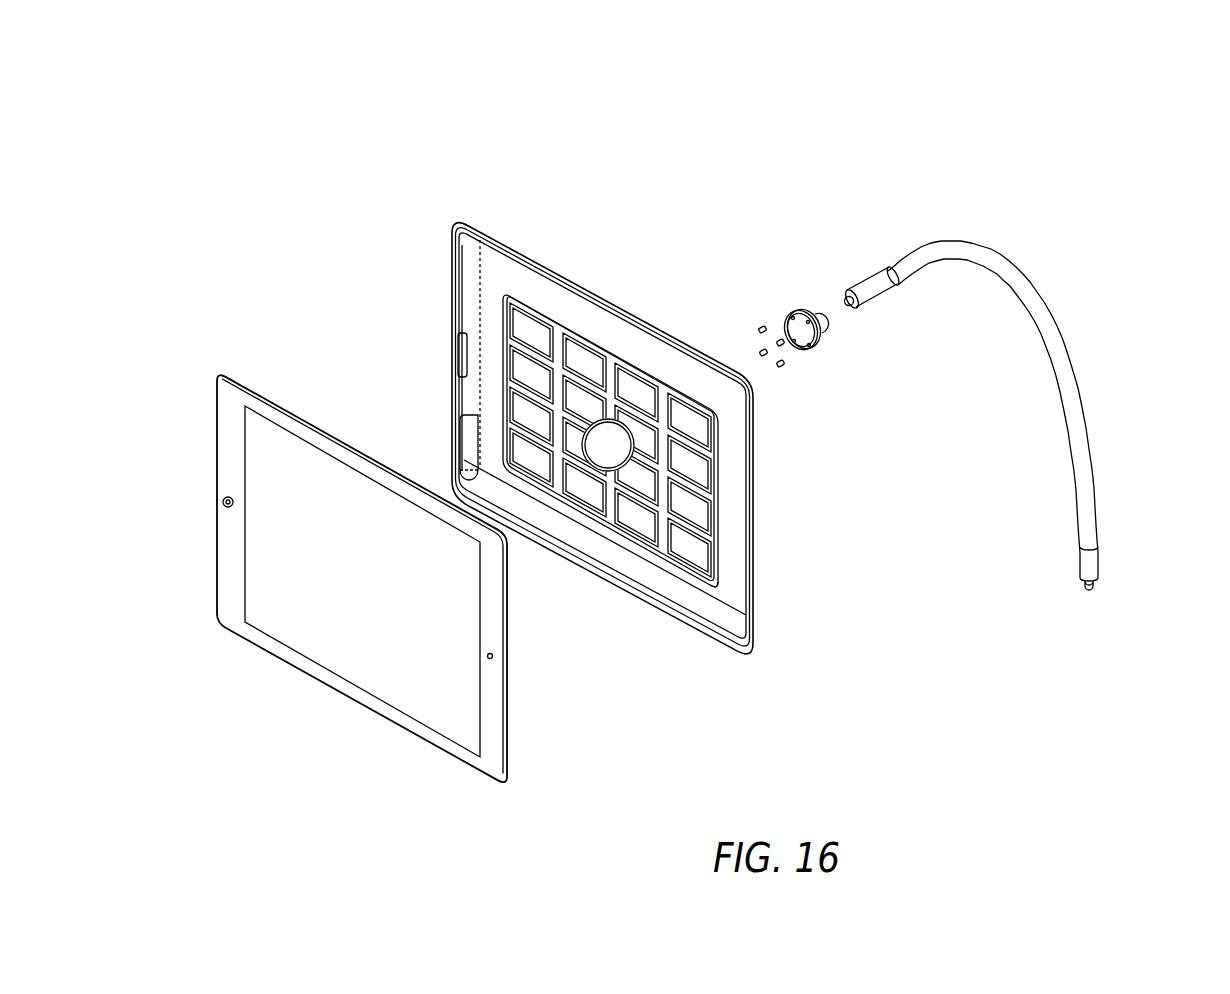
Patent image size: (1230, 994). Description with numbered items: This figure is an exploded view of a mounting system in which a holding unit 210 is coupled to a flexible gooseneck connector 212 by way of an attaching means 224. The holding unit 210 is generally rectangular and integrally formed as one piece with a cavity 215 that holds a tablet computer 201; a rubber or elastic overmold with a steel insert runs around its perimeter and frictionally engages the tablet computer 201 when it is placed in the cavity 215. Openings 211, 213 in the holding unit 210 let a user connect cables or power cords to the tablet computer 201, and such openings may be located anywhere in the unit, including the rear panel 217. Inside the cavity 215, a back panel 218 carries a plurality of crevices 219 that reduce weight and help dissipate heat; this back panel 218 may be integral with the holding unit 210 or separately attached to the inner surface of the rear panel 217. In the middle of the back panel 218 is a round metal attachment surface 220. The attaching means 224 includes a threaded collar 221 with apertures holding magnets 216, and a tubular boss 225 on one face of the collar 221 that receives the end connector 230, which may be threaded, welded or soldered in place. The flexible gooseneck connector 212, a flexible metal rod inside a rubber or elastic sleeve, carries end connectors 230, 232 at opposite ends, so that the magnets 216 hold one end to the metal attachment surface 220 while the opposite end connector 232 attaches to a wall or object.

The tablet computer 201 is at (219, 363).
The holding unit 210 is at (448, 223).
The opening 211 is at (455, 350).
The flexible gooseneck connector 212 is at (969, 240).
The opening 213 is at (466, 444).
The cavity 215 is at (501, 280).
The magnets 216 is at (757, 322).
The rear panel 217 is at (632, 311).
The back panel 218 is at (722, 578).
The crevices 219 is at (700, 473).
The metal attachment surface 220 is at (606, 447).
The threaded collar 221 is at (788, 302).
The attaching means 224 is at (818, 258).
The tubular boss 225 is at (833, 328).
The end connector 230 is at (875, 271).
The end connector 232 is at (1096, 560).